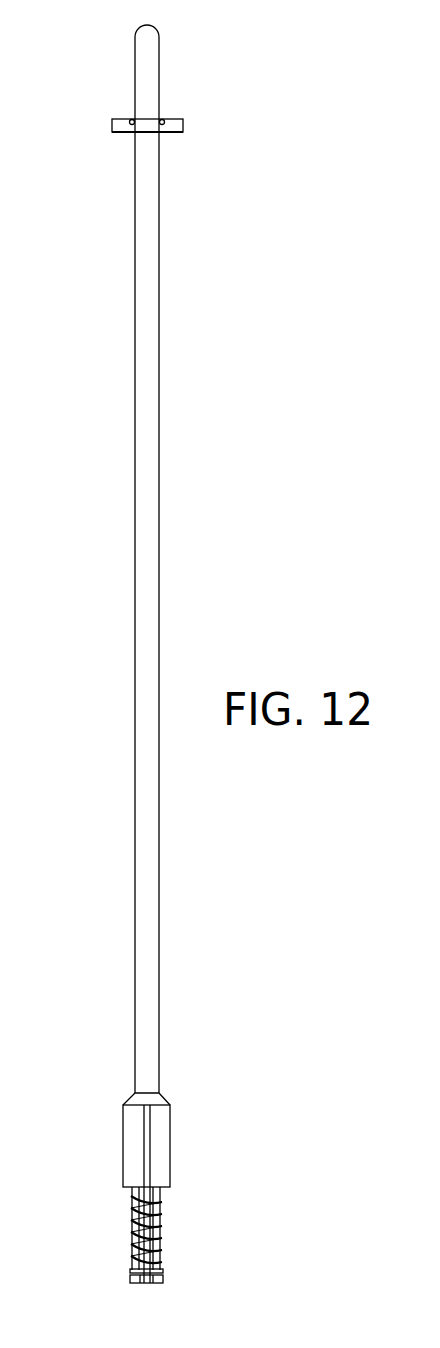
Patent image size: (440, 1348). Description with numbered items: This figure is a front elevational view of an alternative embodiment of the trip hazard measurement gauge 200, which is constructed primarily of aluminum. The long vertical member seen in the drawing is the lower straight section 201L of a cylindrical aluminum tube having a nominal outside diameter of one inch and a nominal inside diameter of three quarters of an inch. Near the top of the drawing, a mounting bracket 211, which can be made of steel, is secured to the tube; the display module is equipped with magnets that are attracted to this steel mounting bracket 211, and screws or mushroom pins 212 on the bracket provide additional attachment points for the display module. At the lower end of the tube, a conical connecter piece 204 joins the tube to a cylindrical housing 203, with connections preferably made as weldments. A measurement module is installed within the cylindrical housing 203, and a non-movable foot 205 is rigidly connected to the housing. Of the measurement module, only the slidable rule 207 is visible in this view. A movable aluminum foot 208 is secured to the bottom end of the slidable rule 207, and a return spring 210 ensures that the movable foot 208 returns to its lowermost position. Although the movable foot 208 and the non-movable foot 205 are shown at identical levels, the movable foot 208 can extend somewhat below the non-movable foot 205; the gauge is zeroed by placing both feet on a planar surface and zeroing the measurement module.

The trip hazard measurement gauge 200 is at (231, 77).
The lower straight section 201L is at (147, 705).
The mounting bracket 211 is at (172, 125).
The holes 212 is at (160, 119).
The conical connecter piece 204 is at (140, 1100).
The cylindrical housing 203 is at (160, 1122).
The non-movable foot 205 is at (147, 1170).
The slidable rule 207 is at (133, 1227).
The return spring 210 is at (158, 1230).
The movable foot 208 is at (157, 1282).